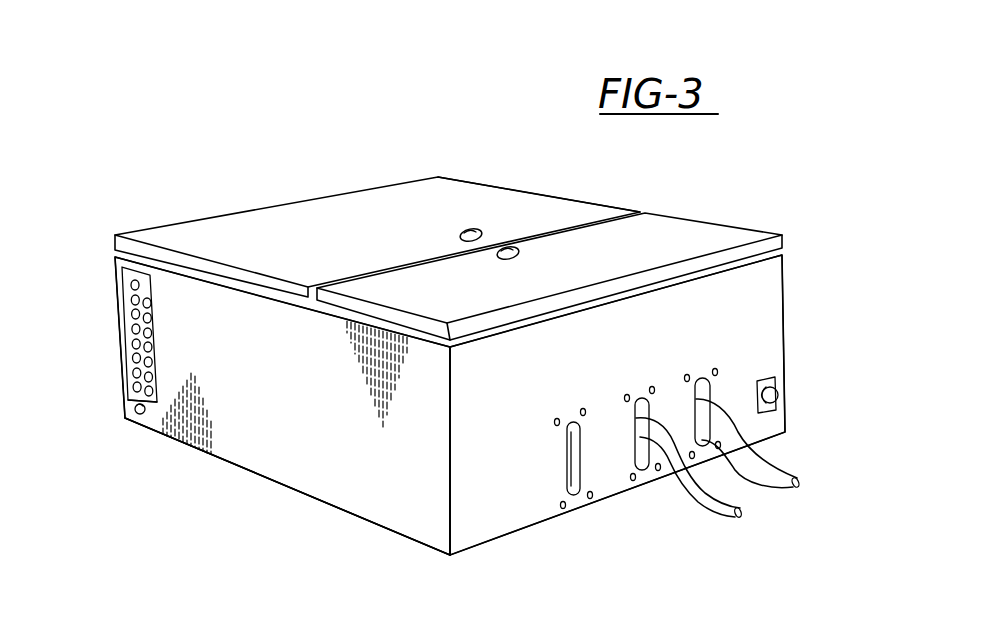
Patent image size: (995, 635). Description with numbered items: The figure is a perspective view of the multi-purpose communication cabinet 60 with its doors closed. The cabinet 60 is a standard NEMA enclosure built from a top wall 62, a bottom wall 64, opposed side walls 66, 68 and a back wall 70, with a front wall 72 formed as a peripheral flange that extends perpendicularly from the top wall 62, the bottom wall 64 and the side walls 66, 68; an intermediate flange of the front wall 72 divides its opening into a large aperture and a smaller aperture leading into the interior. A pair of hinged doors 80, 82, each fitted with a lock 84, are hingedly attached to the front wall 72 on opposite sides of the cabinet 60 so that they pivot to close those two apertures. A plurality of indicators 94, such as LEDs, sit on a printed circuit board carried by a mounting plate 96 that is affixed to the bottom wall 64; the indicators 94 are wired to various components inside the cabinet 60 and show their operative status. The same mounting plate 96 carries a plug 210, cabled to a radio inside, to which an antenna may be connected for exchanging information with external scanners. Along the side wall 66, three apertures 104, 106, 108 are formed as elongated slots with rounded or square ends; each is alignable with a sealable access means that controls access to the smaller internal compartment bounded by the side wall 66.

The communication cabinet 60 is at (383, 174).
The top wall 62 is at (785, 387).
The bottom wall 64 is at (248, 437).
The side wall 66 is at (775, 307).
The side wall 68 is at (120, 387).
The back wall 70 is at (313, 498).
The front wall 72 is at (216, 278).
The hinged door 80 is at (510, 187).
The hinged door 82 is at (710, 228).
The lock 84 is at (466, 229).
The indicators 94 is at (128, 328).
The mounting plate 96 is at (125, 277).
The aperture 104 is at (718, 444).
The aperture 106 is at (655, 473).
The aperture 108 is at (575, 495).
The plug 210 is at (140, 415).